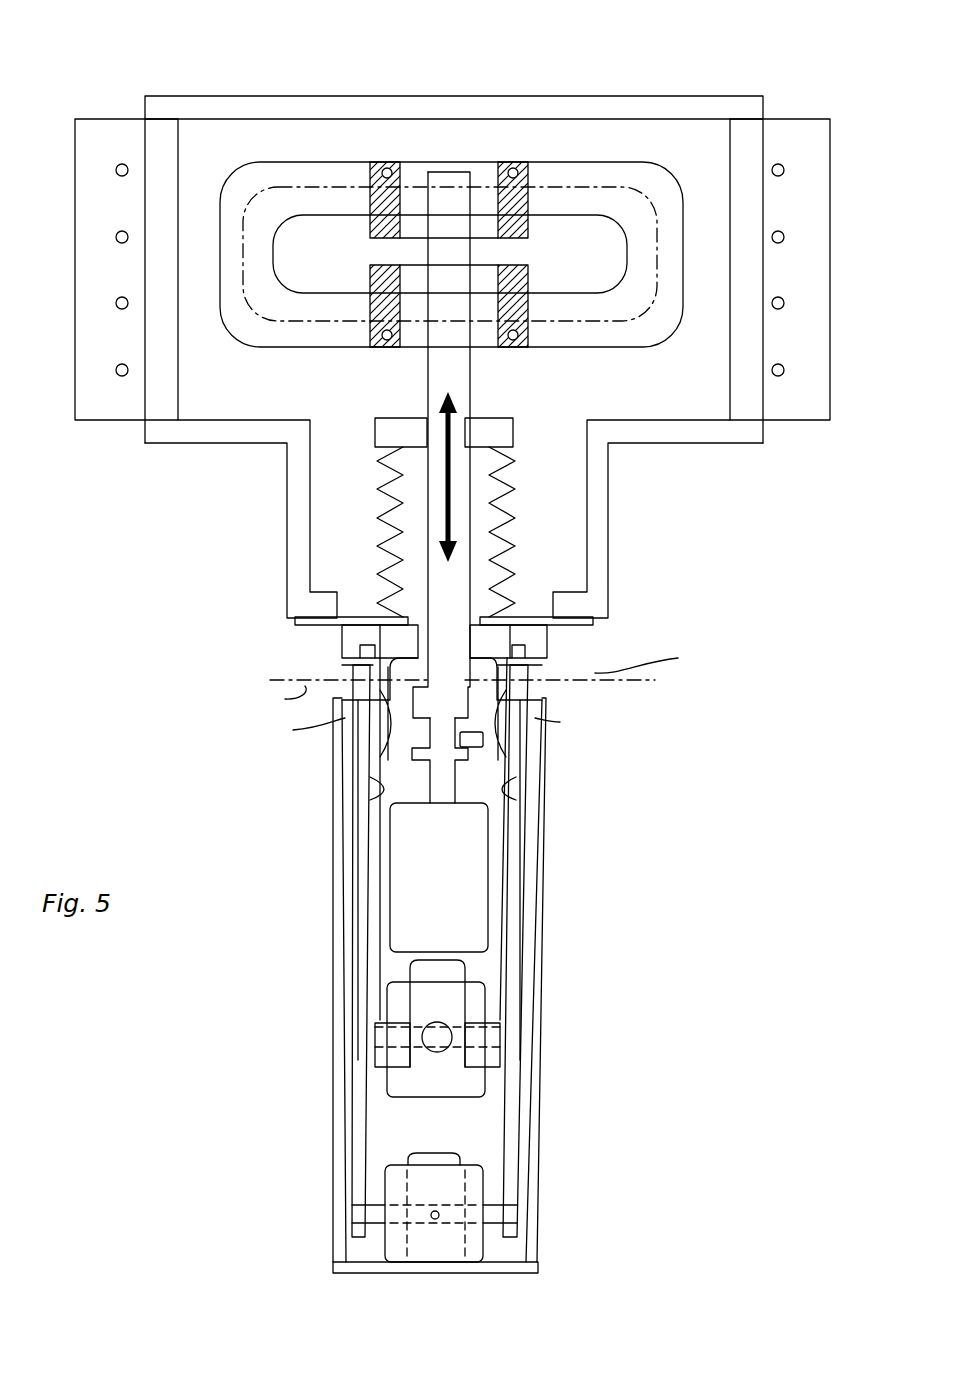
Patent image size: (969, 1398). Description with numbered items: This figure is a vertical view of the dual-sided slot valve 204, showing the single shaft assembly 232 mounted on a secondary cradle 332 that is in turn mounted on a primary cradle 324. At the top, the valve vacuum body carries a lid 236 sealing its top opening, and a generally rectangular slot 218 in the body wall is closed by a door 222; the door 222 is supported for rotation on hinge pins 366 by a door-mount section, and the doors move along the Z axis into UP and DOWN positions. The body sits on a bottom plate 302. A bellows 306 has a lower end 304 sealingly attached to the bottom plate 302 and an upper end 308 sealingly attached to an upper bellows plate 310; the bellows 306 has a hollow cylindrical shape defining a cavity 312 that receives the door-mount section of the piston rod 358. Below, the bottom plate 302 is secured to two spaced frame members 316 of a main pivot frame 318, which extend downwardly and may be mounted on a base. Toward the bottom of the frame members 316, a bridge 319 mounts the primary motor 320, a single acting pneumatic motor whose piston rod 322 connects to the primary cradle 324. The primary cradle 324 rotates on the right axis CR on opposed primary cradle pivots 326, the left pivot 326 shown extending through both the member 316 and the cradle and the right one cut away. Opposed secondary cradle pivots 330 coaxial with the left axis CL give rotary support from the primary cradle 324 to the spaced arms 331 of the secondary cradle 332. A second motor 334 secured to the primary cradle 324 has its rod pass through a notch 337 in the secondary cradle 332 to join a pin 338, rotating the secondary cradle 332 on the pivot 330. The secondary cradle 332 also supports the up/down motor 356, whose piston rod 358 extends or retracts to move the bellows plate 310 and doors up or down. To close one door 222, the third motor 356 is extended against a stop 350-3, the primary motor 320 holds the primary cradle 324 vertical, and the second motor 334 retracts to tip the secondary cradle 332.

The valve 204 is at (155, 66).
The lid 236 is at (250, 108).
The hinge pins 366 is at (449, 253).
The door 222 is at (568, 175).
The slot 218 is at (638, 204).
The single shaft assembly 232 is at (546, 311).
The upper bellows plate 310 is at (380, 432).
The cavity 312 is at (482, 457).
The upper end 308 is at (385, 468).
The bellows 306 is at (363, 501).
The lower end 304 is at (385, 552).
The bottom plate 302 is at (320, 600).
The primary cradle 324 is at (345, 637).
The primary cradle pivots 326 is at (340, 668).
The secondary cradle pivots 330 is at (388, 745).
The secondary cradle 332 is at (360, 777).
The arms 331 is at (490, 635).
The frame members 316 is at (340, 883).
The main pivot frame 318 is at (322, 843).
The piston rod 358 is at (440, 792).
The stop 350-3 is at (476, 748).
The up/down motor 356 is at (480, 923).
The notch 337 is at (418, 1003).
The second motor 334 is at (472, 1078).
The pin 338 is at (445, 1050).
The primary motor 320 is at (473, 1172).
The piston rod 322 is at (435, 1222).
The bridge 319 is at (368, 1262).